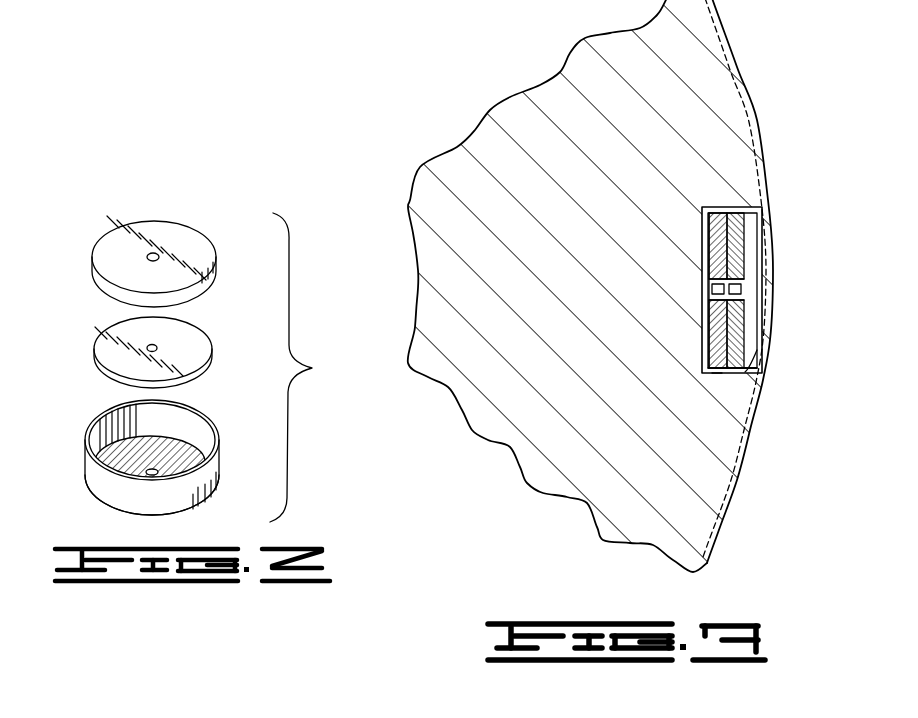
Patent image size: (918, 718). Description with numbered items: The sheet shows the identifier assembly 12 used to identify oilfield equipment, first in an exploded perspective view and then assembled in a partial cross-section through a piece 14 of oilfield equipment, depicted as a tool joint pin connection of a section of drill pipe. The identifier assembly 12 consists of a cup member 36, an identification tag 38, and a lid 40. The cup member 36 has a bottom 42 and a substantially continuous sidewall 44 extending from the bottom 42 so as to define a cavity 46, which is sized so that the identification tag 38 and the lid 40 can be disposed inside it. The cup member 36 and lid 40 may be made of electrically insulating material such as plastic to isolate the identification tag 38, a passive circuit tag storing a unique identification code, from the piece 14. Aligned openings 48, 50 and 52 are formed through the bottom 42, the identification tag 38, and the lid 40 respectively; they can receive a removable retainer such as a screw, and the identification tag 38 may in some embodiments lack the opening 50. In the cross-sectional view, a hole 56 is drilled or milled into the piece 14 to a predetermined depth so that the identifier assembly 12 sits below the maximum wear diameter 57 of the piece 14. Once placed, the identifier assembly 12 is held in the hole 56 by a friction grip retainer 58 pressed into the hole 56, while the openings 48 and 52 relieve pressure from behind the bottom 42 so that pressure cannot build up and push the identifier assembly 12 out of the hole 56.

In FIG. 2, the identifier assembly 12 is at (314, 367).
In FIG. 3, the identifier assembly 12 is at (768, 251).
In FIG. 3, the piece of oilfield equipment 14 is at (762, 116).
In FIG. 2, the cup member 36 is at (187, 505).
In FIG. 3, the cup member 36 is at (763, 223).
In FIG. 2, the identification tag 38 is at (203, 373).
In FIG. 3, the identification tag 38 is at (719, 213).
In FIG. 2, the lid 40 is at (92, 272).
In FIG. 3, the lid 40 is at (738, 213).
In FIG. 2, the bottom 42 is at (173, 440).
In FIG. 3, the bottom 42 is at (715, 378).
In FIG. 2, the sidewall 44 is at (110, 493).
In FIG. 3, the sidewall 44 is at (735, 377).
In FIG. 2, the cavity 46 is at (190, 455).
In FIG. 2, the opening 48 is at (137, 442).
In FIG. 3, the opening 48 is at (727, 328).
In FIG. 2, the opening 50 is at (158, 347).
In FIG. 3, the opening 50 is at (714, 300).
In FIG. 2, the opening 52 is at (158, 254).
In FIG. 3, the opening 52 is at (738, 283).
In FIG. 3, the hole 56 is at (757, 350).
In FIG. 3, the maximum wear diameter 57 is at (740, 72).
In FIG. 3, the friction grip retainer 58 is at (745, 364).